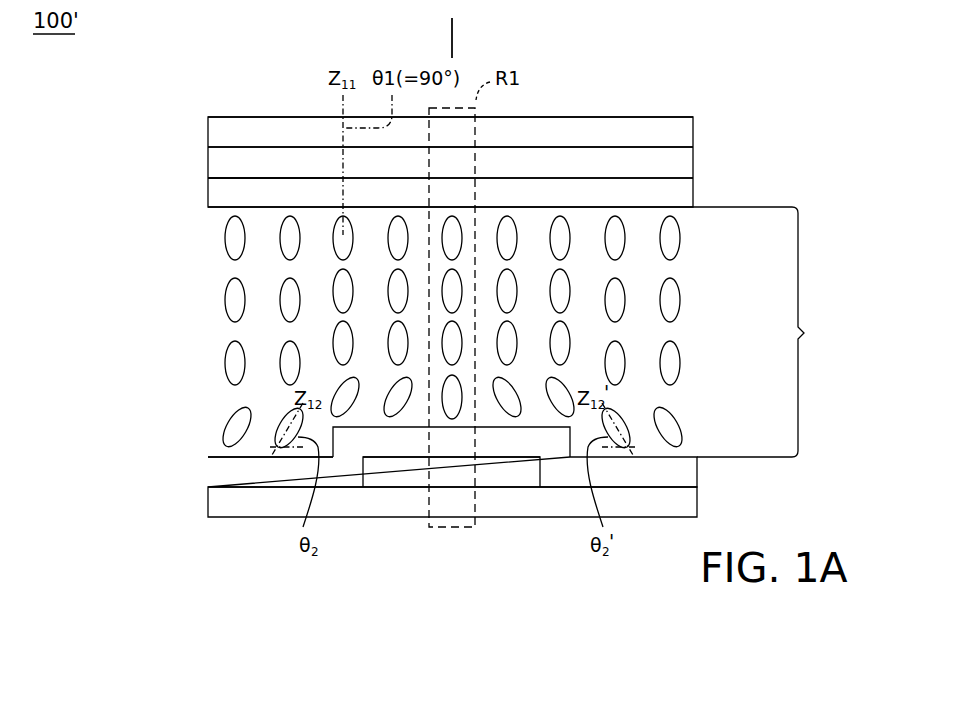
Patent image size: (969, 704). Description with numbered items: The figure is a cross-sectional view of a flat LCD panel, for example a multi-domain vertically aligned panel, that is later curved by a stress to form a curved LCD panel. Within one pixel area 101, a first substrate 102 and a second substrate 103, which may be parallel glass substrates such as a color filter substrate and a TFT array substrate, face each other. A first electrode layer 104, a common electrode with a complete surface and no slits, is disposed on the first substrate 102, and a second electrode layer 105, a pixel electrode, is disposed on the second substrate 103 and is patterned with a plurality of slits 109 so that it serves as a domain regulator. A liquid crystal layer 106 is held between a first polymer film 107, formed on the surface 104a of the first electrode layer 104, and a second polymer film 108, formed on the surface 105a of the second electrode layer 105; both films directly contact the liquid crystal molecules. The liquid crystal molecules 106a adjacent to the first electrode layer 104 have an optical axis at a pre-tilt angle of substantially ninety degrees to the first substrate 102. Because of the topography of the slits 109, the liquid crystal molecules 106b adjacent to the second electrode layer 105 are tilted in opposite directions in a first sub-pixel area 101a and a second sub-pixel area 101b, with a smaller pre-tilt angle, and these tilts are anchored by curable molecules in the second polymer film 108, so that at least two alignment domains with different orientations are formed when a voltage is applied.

The pixel area 101 is at (684, 101).
The first sub-pixel area 101a is at (452, 38).
The second sub-pixel area 101b is at (452, 38).
The first substrate 102 is at (686, 133).
The second substrate 103 is at (540, 503).
The first electrode layer 104 is at (686, 163).
The surface of the first electrode layer 104a is at (236, 182).
The second electrode layer 105 is at (490, 472).
The surface of the second electrode layer 105a is at (387, 431).
The liquid crystal layer 106 is at (531, 332).
The liquid crystal molecules adjacent to the first electrode layer 106a is at (342, 216).
The liquid crystal molecules adjacent to the second electrode layer 106b is at (287, 410).
The first polymer film 107 is at (686, 192).
The second polymer film 108 is at (268, 473).
The slits 109 is at (211, 443).